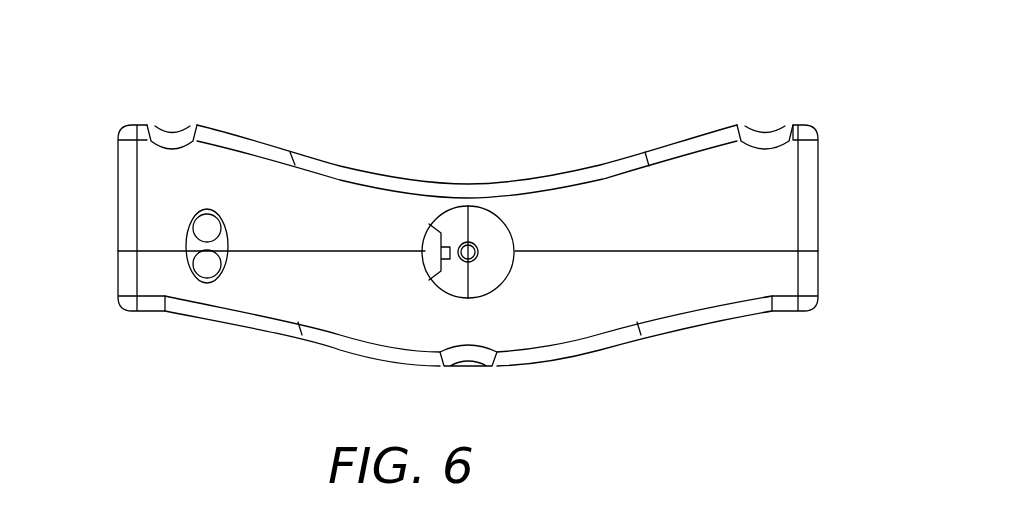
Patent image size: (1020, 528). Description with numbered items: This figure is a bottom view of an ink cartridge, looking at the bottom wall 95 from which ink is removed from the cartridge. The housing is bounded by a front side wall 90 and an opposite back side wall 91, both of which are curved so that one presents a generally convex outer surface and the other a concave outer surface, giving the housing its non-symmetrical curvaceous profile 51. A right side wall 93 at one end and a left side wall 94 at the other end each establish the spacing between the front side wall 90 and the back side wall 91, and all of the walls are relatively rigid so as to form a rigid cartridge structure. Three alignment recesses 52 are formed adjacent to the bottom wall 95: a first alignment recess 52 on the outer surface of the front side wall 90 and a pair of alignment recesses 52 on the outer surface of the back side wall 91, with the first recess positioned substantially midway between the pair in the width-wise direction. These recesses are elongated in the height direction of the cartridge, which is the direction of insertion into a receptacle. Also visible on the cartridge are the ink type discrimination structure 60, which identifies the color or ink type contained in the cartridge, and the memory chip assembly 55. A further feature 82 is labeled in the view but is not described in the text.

The non-symmetrical curvaceous profile 51 is at (492, 183).
The alignment recesses 52 is at (171, 128).
The memory chip assembly 55 is at (210, 224).
The ink type discrimination structure 60 is at (515, 229).
The rib 82 is at (182, 287).
The front side wall 90 is at (617, 340).
The back side wall 91 is at (600, 163).
The right side wall 93 is at (118, 212).
The left side wall 94 is at (805, 200).
The bottom wall 95 is at (345, 288).